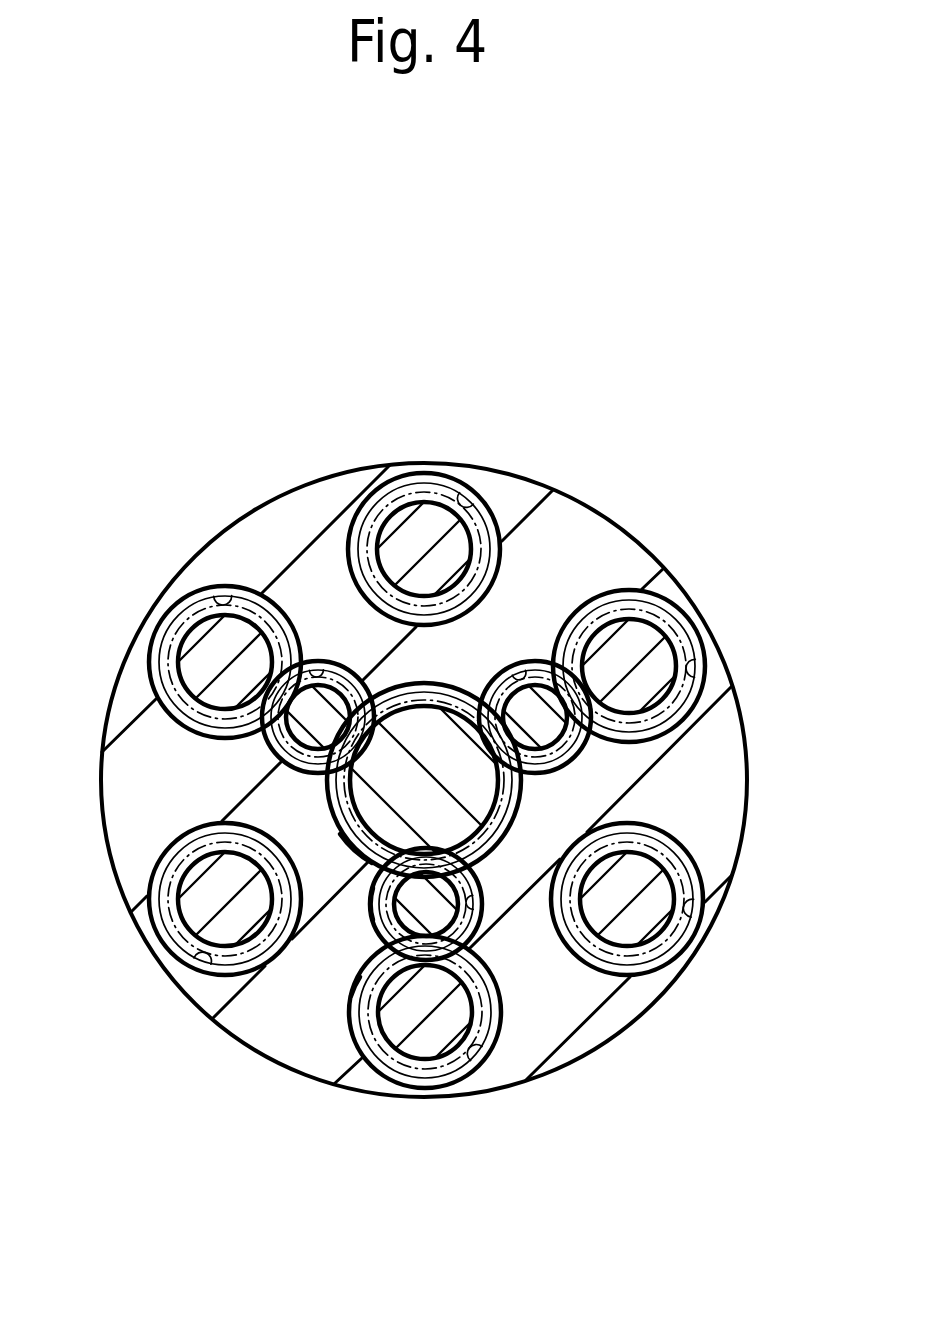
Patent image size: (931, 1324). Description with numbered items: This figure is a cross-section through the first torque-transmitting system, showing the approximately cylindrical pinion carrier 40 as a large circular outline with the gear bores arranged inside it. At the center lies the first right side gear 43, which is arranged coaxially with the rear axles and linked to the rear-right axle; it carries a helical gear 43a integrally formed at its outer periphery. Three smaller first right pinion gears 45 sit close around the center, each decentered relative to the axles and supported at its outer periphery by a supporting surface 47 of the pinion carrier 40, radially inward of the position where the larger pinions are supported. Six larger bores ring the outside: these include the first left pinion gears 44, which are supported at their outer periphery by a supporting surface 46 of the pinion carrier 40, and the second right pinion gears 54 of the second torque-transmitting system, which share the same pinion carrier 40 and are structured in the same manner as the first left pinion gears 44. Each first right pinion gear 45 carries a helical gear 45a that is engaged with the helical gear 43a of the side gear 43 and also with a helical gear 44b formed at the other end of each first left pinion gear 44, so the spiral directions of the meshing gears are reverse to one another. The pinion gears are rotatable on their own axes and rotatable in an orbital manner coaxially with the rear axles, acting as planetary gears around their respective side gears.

The pinion carrier 40 is at (366, 468).
The first right side gear 43 is at (475, 783).
The helical gear 43a is at (352, 852).
The first left pinion gears 44 is at (205, 645).
The helical gear 44b is at (355, 984).
The first right pinion gears 45 is at (280, 749).
The helical gear 45a is at (369, 905).
The supporting surface 46 is at (467, 502).
The supporting surface 47 is at (317, 670).
The second right pinion gears 54 is at (421, 518).